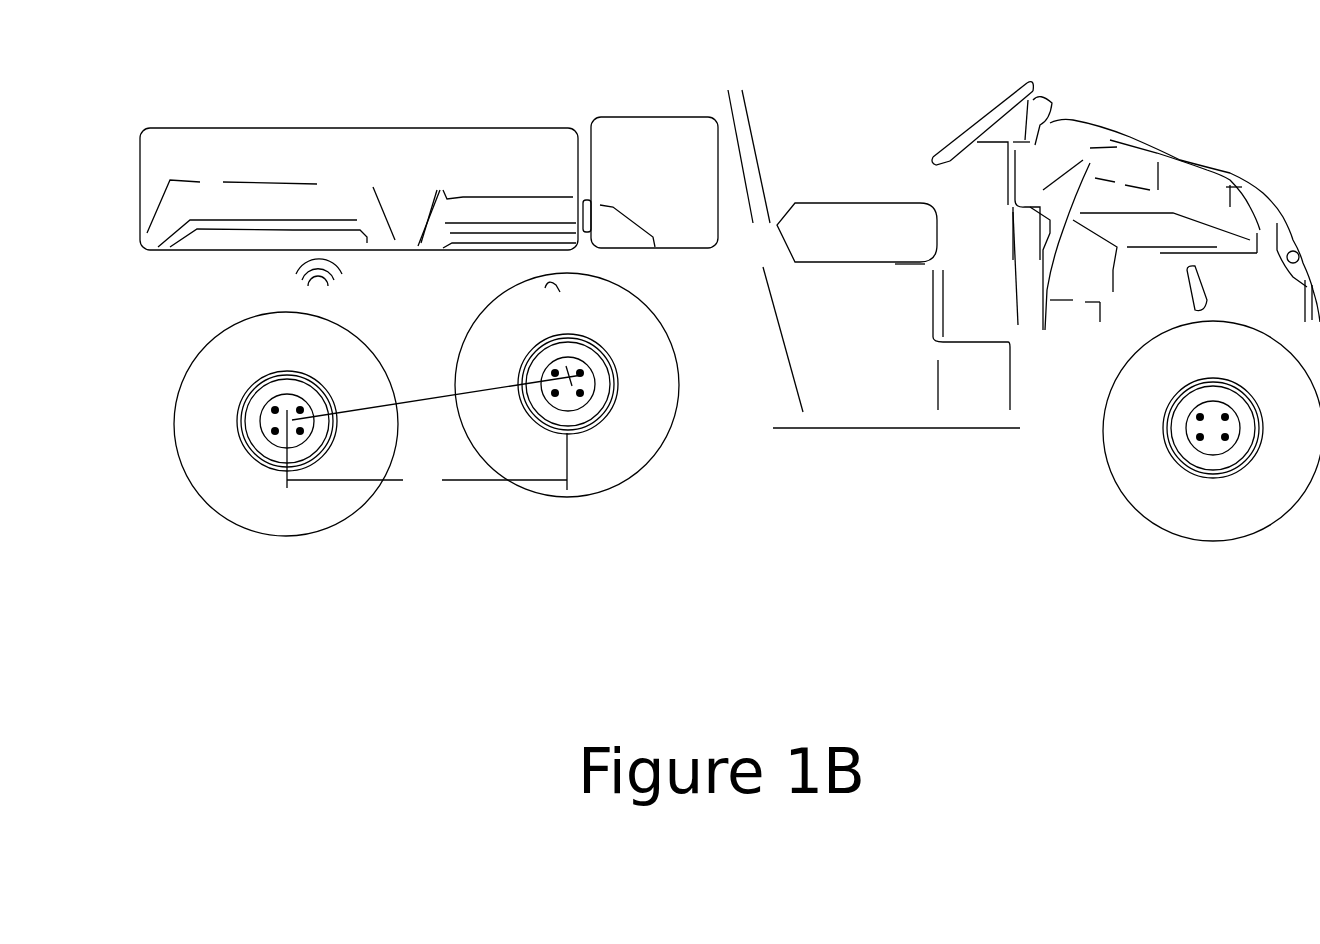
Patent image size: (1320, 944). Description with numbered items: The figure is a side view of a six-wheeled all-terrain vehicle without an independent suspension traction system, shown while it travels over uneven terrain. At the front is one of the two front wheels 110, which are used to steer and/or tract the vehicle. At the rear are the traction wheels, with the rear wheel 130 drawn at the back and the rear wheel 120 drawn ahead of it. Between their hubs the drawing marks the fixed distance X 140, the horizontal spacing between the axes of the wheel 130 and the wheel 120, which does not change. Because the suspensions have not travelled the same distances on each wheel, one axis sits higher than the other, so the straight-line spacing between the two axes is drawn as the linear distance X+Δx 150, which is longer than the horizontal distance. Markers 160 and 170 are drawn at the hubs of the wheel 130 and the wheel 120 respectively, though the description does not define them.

The front wheel 110 is at (1200, 437).
The rear wheel 120 is at (587, 400).
The rear wheel 130 is at (267, 440).
The fixed distance X 140 is at (424, 503).
The linear distance X+Δx 150 is at (412, 352).
The first wheel sensor 160 is at (275, 410).
The second wheel sensor 170 is at (582, 375).